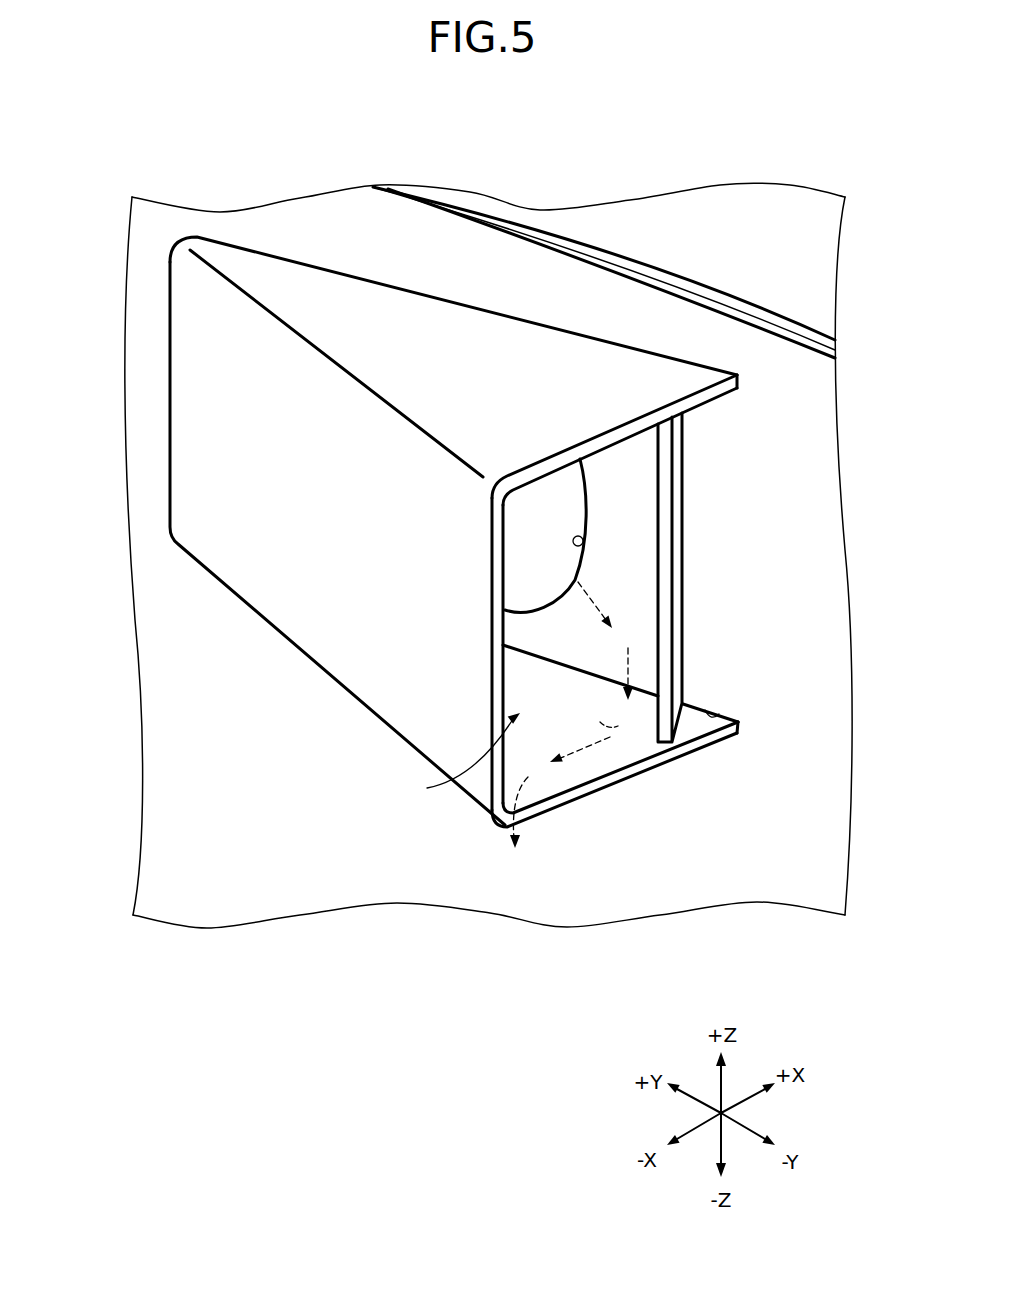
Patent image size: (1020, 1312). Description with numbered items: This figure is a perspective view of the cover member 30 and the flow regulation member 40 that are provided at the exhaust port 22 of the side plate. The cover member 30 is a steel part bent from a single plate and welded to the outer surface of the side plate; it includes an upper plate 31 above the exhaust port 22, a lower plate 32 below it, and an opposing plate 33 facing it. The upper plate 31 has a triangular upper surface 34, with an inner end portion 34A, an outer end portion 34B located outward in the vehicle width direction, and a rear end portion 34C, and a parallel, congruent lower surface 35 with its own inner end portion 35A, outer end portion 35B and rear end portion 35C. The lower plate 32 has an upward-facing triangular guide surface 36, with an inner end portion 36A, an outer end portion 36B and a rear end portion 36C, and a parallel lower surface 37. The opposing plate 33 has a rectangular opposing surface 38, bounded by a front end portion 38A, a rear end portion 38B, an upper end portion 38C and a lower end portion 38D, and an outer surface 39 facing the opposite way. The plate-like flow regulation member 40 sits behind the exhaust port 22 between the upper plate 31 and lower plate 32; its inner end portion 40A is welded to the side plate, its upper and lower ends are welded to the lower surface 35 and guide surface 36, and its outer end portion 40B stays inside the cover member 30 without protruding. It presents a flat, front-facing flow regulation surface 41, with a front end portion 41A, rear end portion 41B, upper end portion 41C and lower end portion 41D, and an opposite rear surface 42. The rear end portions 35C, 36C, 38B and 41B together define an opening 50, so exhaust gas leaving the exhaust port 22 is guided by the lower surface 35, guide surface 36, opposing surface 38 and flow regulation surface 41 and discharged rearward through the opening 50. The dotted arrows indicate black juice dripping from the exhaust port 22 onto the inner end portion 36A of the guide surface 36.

The exhaust port 22 is at (583, 551).
The cover member 30 is at (553, 362).
The upper plate 31 is at (453, 323).
The lower plate 32 is at (547, 785).
The opposing plate 33 is at (382, 672).
The upper surface 34 is at (587, 357).
The inner end portion 34A is at (497, 312).
The outer end portion 34B is at (367, 383).
The rear end portion 34C is at (638, 415).
The lower surface 35 is at (618, 447).
The inner end portion 35A is at (738, 376).
The outer end portion 35B is at (513, 489).
The rear end portion 35C is at (632, 440).
The guide surface 36 is at (602, 722).
The inner end portion 36A is at (715, 712).
The outer end portion 36B is at (506, 827).
The rear end portion 36C is at (667, 750).
The lower surface 37 is at (613, 790).
The opposing surface 38 is at (503, 634).
The front end portion 38A is at (170, 393).
The rear end portion 38B is at (503, 700).
The upper end portion 38C is at (505, 495).
The lower end portion 38D is at (564, 785).
The outer surface 39 is at (307, 588).
The flow regulation member 40 is at (682, 603).
The inner end portion 40A is at (683, 489).
The outer end portion 40B is at (600, 452).
The flow regulation surface 41 is at (655, 590).
The front end portion 41A is at (682, 515).
The rear end portion 41B is at (658, 650).
The upper end portion 41C is at (660, 413).
The lower end portion 41D is at (655, 743).
The rear surface 42 is at (682, 578).
The opening 50 is at (457, 758).